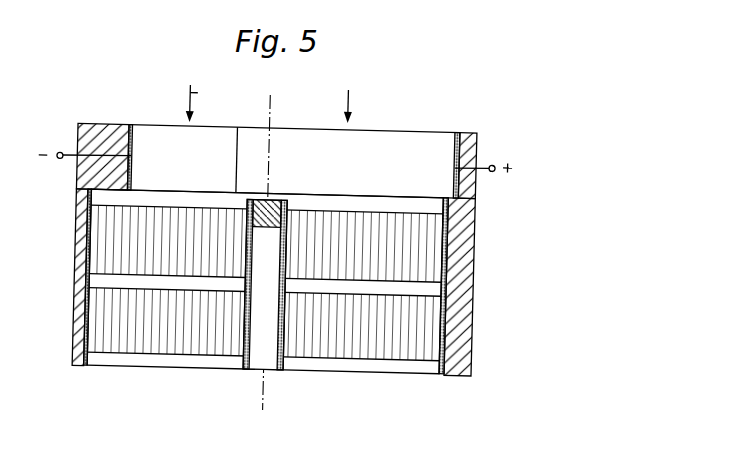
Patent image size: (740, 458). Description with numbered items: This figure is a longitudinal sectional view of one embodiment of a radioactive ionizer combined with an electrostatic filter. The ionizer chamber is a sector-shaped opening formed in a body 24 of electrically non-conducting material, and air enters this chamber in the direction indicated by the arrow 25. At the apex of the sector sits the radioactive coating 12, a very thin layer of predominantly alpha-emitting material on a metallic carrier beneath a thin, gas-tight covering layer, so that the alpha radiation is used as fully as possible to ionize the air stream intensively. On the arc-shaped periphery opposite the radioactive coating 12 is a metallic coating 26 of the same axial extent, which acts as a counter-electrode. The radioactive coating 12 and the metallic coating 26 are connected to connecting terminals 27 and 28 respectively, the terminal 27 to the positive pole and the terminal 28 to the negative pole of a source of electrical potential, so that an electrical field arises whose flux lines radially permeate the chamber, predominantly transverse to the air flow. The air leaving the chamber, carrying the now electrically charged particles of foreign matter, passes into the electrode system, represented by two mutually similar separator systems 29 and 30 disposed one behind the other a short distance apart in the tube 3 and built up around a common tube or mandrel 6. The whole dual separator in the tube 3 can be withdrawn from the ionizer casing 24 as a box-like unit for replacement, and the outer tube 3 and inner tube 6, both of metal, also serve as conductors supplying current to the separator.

The tube 3 is at (98, 366).
The tube or mandrel 6 is at (249, 368).
The radioactive coating 12 is at (448, 142).
The body 24 is at (474, 137).
The arrow 25 is at (190, 95).
The metallic coating 26 is at (130, 139).
The connecting terminal 27 is at (492, 168).
The connecting terminal 28 is at (56, 165).
The separator system 29 is at (349, 211).
The separator system 30 is at (382, 352).